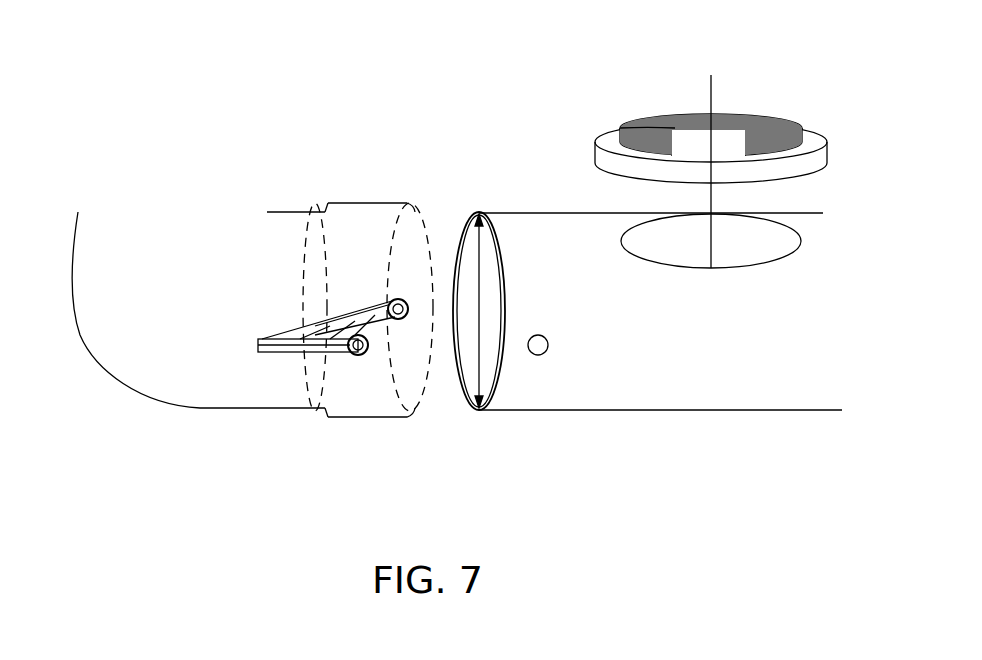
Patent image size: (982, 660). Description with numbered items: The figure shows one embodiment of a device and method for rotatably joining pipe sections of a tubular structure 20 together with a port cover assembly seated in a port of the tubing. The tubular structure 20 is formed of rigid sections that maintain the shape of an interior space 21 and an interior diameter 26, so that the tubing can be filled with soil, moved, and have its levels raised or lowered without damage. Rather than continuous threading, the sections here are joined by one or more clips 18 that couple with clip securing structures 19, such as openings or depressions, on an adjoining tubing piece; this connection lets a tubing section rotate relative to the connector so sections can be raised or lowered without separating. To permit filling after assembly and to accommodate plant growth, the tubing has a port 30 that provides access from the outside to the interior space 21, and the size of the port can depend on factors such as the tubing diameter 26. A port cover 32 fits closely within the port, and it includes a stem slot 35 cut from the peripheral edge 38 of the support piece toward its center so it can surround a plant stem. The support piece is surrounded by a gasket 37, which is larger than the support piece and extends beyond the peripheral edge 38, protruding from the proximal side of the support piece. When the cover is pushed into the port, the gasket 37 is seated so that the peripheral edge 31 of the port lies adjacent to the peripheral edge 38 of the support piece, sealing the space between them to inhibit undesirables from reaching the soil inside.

The clip 18 is at (320, 327).
The clip securing structure 19 is at (548, 345).
The tubular structure 20 is at (273, 160).
The interior space 21 is at (420, 356).
The interior diameter 26 is at (479, 299).
The port 30 is at (680, 239).
The peripheral edge of port 31 is at (777, 255).
The port cover 32 is at (675, 100).
The stem slot 35 is at (689, 110).
The gasket 37 is at (605, 142).
The peripheral edge of support piece 38 is at (625, 124).